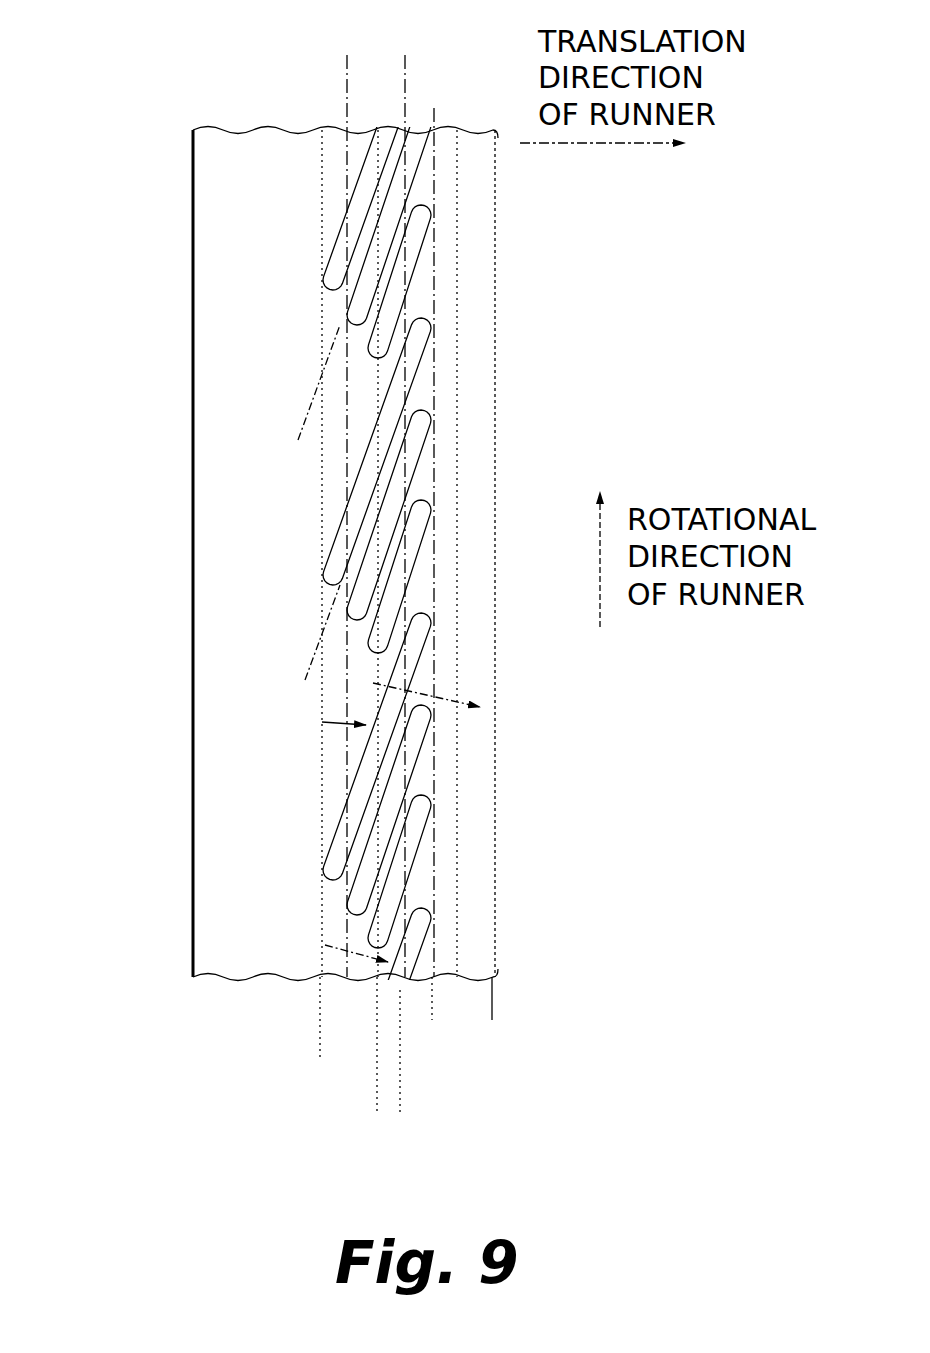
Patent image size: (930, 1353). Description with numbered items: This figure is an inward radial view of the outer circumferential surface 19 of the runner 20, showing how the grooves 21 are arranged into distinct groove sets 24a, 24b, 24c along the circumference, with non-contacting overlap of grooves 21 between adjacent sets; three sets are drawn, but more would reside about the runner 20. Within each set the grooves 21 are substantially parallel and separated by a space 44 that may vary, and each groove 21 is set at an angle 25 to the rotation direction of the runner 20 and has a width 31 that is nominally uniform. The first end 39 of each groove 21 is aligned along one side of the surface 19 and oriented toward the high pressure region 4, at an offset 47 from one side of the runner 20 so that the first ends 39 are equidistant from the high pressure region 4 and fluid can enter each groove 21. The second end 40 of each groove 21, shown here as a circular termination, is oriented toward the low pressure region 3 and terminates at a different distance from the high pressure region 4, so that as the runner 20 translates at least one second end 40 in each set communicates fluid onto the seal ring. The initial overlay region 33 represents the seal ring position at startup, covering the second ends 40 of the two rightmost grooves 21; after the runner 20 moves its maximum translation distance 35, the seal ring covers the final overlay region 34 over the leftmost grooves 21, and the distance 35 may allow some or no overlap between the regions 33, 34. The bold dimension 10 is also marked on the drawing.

The low pressure region 3 is at (112, 199).
The high pressure region 4 is at (614, 231).
The slot pitch dimension 10 is at (411, 822).
The outer circumferential surface 19 is at (440, 138).
The runner 20 is at (150, 946).
The grooves 21 is at (430, 334).
The groove set 24a is at (305, 830).
The groove set 24b is at (297, 537).
The groove set 24c is at (300, 226).
The angle 25 is at (322, 724).
The width 31 is at (302, 428).
The initial overlay region 33 is at (470, 70).
The final overlay region 34 is at (420, 1047).
The maximum translation distance 35 is at (315, 1100).
The first end 39 is at (432, 626).
The second end 40 is at (322, 873).
The space 44 is at (352, 672).
The offset 47 is at (385, 1008).